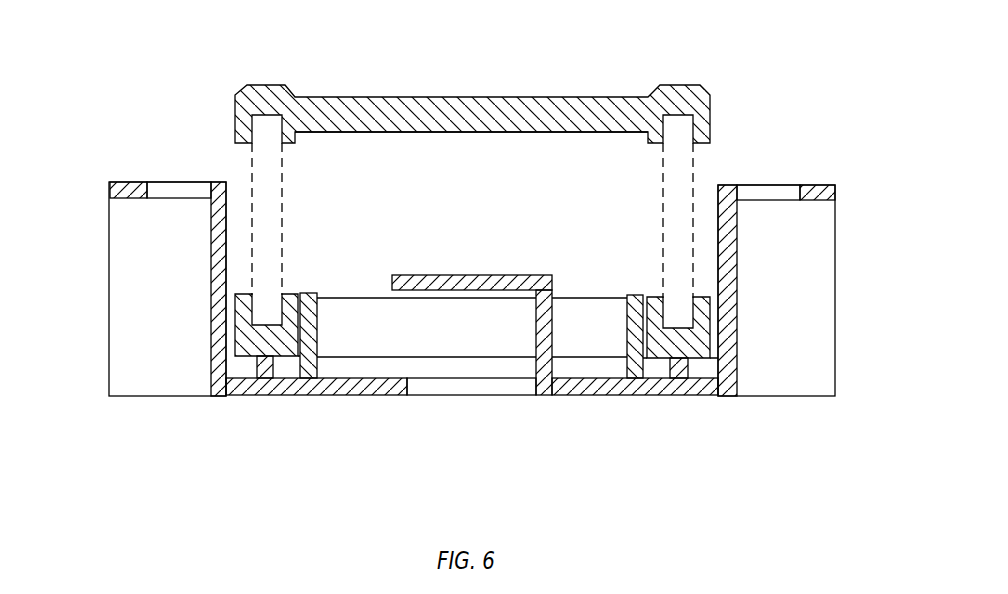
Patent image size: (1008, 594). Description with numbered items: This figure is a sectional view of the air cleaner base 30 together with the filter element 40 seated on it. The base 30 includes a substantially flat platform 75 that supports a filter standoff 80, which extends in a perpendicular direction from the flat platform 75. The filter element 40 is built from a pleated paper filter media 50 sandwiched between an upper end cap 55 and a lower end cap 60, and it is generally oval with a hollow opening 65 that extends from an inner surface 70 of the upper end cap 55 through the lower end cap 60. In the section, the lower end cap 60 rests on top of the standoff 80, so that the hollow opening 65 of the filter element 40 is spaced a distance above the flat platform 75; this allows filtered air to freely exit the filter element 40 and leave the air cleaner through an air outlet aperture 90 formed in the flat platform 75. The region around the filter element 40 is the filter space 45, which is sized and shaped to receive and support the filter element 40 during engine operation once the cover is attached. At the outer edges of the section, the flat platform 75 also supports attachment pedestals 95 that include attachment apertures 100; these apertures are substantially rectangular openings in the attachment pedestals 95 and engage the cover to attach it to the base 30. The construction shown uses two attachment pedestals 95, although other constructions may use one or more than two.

The base 30 is at (722, 397).
The filter element 40 is at (740, 68).
The filter space 45 is at (722, 177).
The pleated paper filter media 50 is at (295, 185).
The upper end cap 55 is at (378, 98).
The lower end cap 60 is at (288, 294).
The hollow opening 65 is at (430, 447).
The inner surface 70 is at (506, 133).
The flat platform 75 is at (347, 348).
The filter standoff 80 is at (265, 360).
The air outlet aperture 90 is at (527, 397).
The attachment pedestals 95 is at (123, 182).
The attachment apertures 100 is at (143, 197).